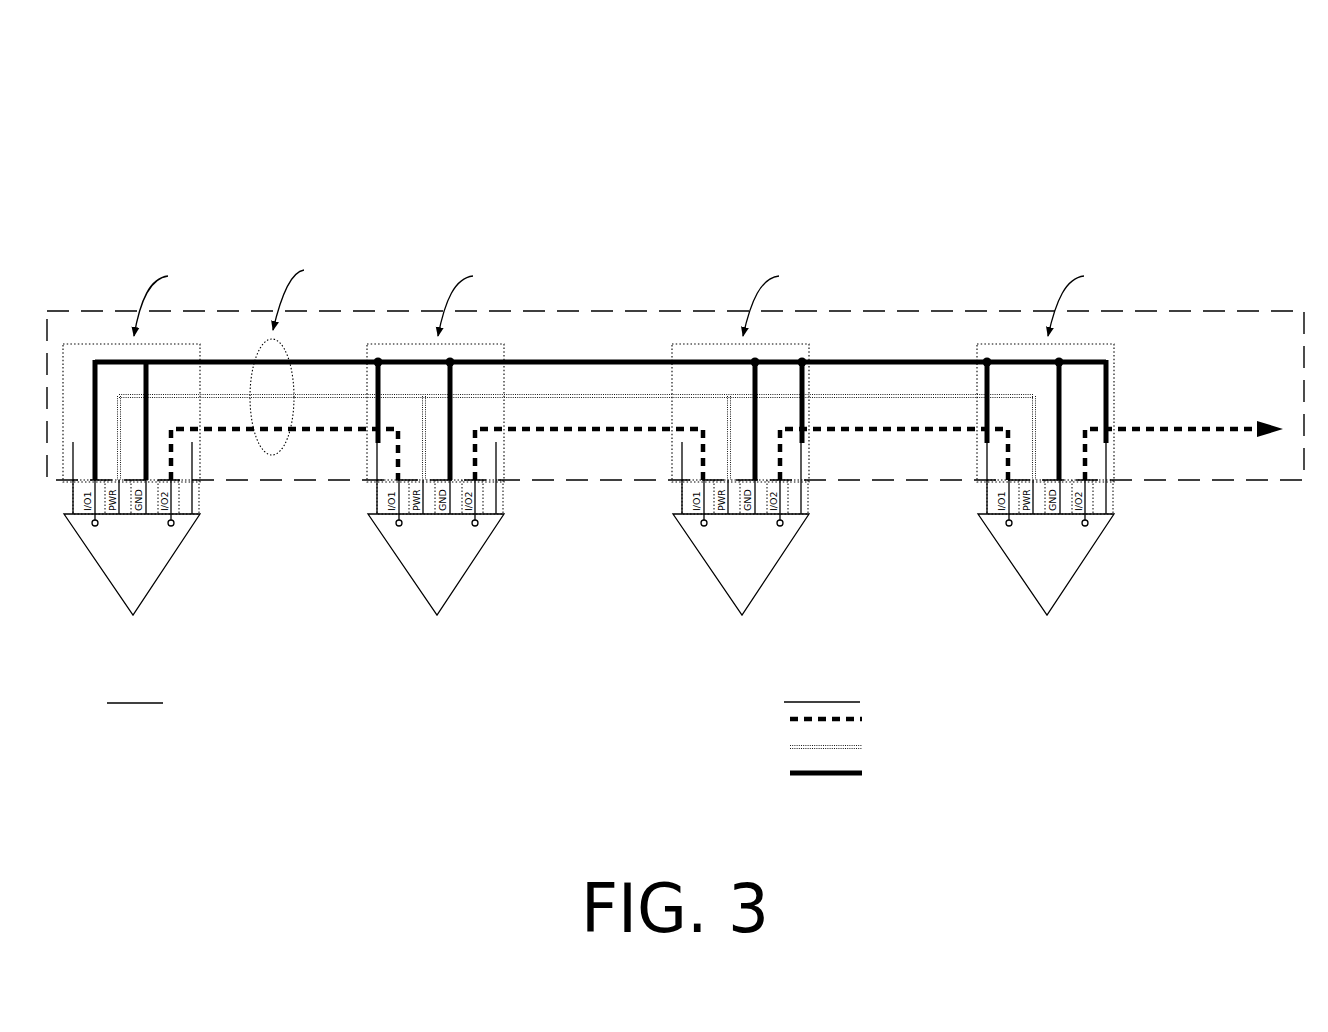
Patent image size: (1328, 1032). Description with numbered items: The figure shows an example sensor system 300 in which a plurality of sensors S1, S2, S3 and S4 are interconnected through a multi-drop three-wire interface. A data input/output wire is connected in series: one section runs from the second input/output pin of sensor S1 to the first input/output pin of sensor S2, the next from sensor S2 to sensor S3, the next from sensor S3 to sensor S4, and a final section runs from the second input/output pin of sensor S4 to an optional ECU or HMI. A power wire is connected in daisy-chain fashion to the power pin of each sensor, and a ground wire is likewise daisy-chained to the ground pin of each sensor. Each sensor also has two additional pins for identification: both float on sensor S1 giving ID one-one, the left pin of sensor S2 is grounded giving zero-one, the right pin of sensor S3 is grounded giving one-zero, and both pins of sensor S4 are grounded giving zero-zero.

The sensor system 300 is at (670, 58).
The sensor S1 is at (131, 479).
The sensor S2 is at (435, 479).
The sensor S3 is at (740, 479).
The sensor S4 is at (1045, 479).